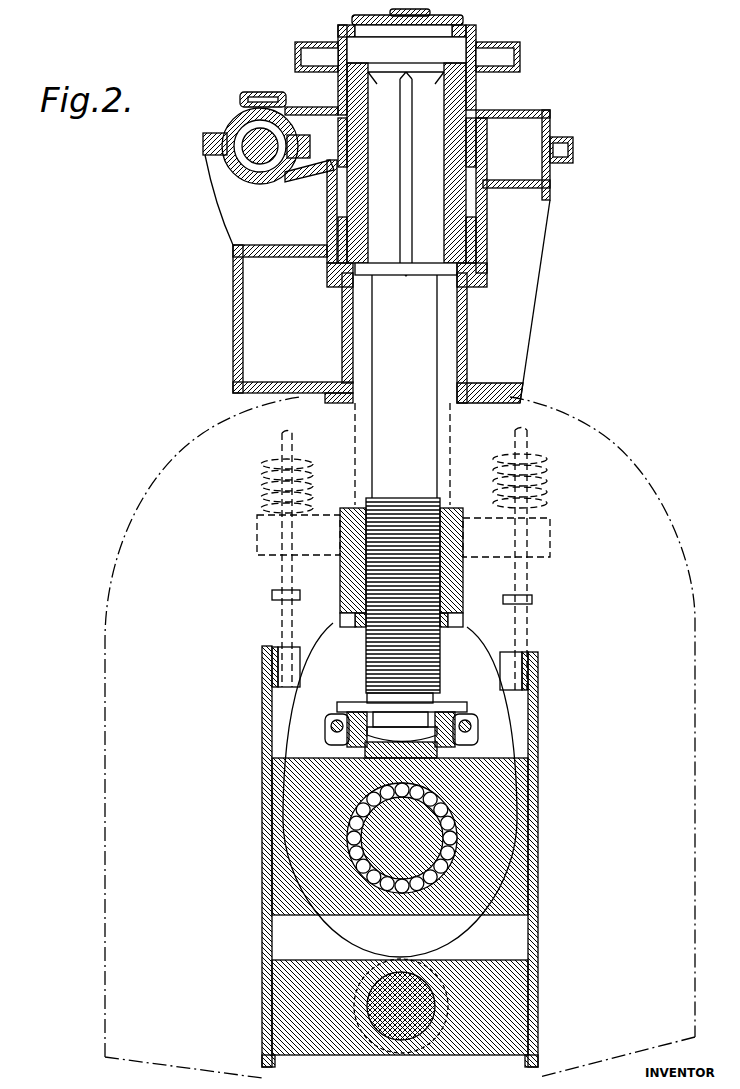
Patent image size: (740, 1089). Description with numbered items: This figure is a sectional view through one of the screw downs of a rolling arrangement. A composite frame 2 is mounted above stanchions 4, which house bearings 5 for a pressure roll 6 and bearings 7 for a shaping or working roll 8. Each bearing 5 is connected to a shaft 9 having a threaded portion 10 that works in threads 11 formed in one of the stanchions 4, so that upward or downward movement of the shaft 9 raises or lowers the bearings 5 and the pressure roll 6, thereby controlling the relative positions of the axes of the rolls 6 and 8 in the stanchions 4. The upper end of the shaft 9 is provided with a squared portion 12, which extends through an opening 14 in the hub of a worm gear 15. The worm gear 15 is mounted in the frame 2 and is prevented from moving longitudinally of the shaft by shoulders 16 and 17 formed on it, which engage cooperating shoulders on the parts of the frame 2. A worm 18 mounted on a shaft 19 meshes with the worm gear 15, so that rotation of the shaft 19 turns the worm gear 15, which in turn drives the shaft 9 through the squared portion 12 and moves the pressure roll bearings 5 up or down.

The composite frame 2 is at (468, 309).
The stanchion 4 is at (588, 448).
The bearing for pressure roll 5 is at (507, 830).
The pressure roll 6 is at (465, 940).
The bearing for working roll 7 is at (302, 978).
The shaping or working roll 8 is at (410, 1055).
The shaft 9 is at (415, 458).
The threaded portion 10 is at (415, 593).
The threads 11 is at (462, 538).
The squared portion 12 is at (479, 272).
The opening 14 is at (340, 99).
The worm gear 15 is at (537, 142).
The shoulder 16 is at (483, 257).
The shoulder 17 is at (483, 87).
The worm 18 is at (233, 117).
The shaft 19 is at (262, 130).